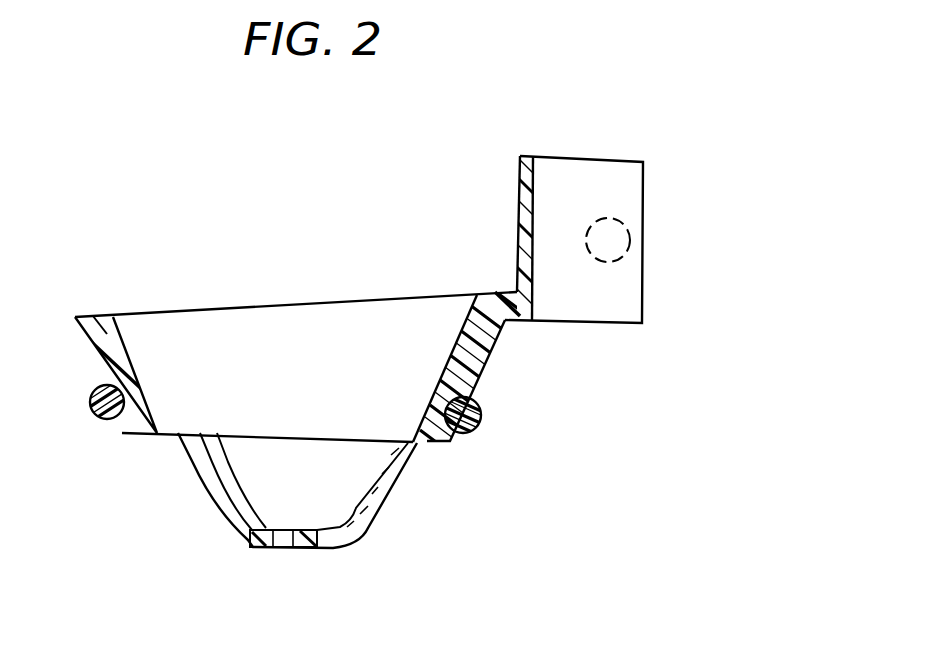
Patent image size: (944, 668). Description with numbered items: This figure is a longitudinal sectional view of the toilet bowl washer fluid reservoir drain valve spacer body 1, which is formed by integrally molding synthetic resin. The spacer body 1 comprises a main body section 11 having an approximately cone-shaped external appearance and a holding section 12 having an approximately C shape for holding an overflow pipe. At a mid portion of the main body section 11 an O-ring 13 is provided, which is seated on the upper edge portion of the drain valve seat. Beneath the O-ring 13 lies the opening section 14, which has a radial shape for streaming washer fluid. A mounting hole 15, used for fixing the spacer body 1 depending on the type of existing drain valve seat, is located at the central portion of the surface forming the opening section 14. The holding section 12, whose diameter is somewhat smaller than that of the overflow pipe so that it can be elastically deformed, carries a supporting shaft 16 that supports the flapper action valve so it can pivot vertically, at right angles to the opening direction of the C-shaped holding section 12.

The toilet bowl washer fluid reservoir drain valve spacer body 1 is at (118, 210).
The main body section 11 is at (293, 303).
The holding section 12 is at (592, 157).
The O-ring 13 is at (98, 423).
The opening section 14 is at (238, 503).
The mounting hole 15 is at (287, 548).
The supporting shaft 16 is at (600, 262).